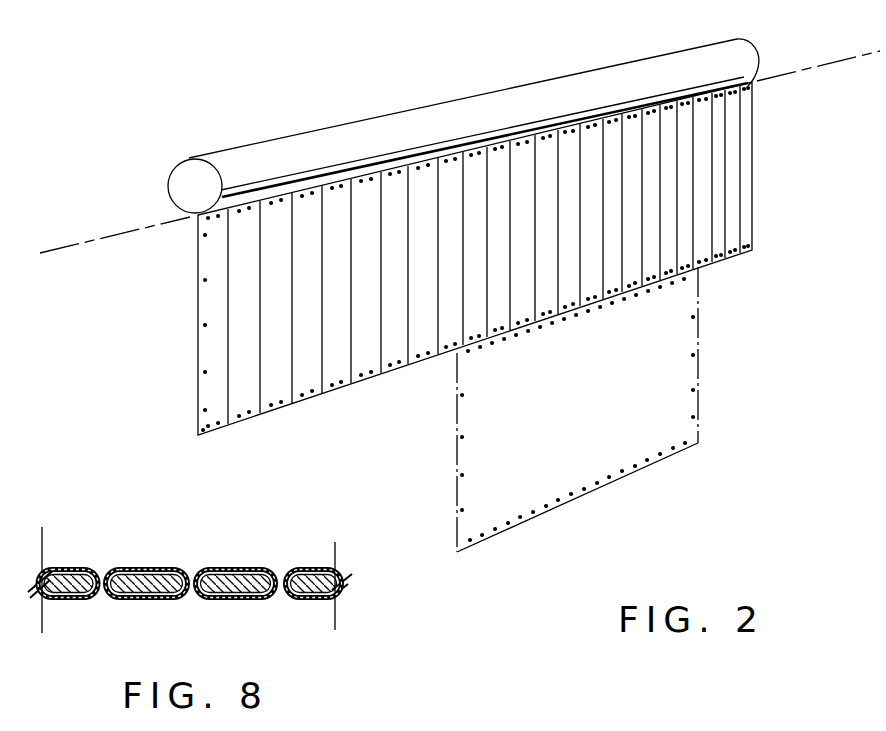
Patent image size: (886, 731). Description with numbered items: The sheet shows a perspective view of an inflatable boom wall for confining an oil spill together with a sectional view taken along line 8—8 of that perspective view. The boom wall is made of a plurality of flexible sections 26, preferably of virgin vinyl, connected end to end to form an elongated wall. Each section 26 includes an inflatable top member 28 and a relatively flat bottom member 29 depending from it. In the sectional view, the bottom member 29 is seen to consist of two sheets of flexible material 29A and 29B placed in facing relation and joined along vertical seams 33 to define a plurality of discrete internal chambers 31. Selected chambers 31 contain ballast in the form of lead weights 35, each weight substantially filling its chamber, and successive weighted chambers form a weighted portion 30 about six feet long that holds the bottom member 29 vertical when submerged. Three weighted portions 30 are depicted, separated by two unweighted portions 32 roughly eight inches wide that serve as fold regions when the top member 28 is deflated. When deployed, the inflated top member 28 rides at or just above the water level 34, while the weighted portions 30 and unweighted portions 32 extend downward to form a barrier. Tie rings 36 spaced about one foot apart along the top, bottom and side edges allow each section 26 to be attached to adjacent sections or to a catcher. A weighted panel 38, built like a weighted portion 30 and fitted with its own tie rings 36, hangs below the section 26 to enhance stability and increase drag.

In FIG. 2, the flexible section 26 is at (178, 388).
In FIG. 2, the inflatable top member 28 is at (455, 101).
In FIG. 2, the bottom member 29 is at (197, 340).
In FIG. 2, the weighted portion 30 is at (312, 408).
In FIG. 2, the unweighted portion 32 is at (620, 131).
In FIG. 2, the vertical seam 33 is at (227, 248).
In FIG. 2, the water level 34 is at (80, 243).
In FIG. 2, the tie ring 36 is at (203, 437).
In FIG. 2, the weighted panel 38 is at (668, 373).
In FIG. 2, the section line 8 is at (317, 283).
In FIG. 8, the sheet of flexible material 29A is at (68, 568).
In FIG. 8, the sheet of flexible material 29B is at (78, 602).
In FIG. 8, the internal chamber 31 is at (85, 574).
In FIG. 8, the lead weight 35 is at (315, 572).